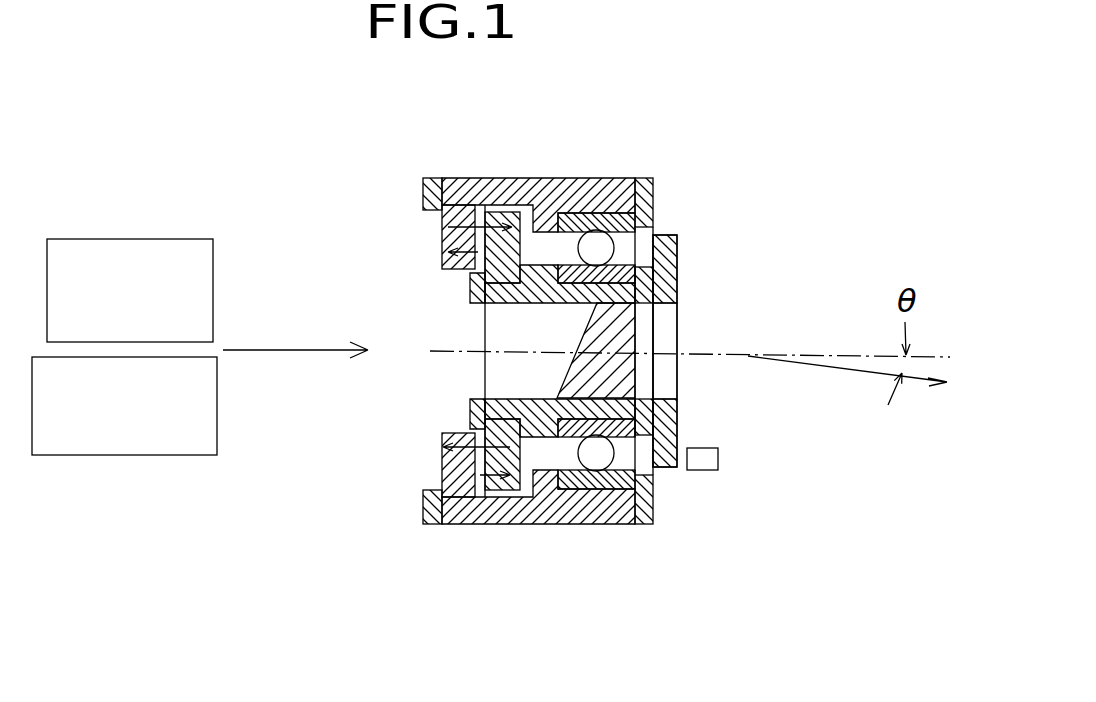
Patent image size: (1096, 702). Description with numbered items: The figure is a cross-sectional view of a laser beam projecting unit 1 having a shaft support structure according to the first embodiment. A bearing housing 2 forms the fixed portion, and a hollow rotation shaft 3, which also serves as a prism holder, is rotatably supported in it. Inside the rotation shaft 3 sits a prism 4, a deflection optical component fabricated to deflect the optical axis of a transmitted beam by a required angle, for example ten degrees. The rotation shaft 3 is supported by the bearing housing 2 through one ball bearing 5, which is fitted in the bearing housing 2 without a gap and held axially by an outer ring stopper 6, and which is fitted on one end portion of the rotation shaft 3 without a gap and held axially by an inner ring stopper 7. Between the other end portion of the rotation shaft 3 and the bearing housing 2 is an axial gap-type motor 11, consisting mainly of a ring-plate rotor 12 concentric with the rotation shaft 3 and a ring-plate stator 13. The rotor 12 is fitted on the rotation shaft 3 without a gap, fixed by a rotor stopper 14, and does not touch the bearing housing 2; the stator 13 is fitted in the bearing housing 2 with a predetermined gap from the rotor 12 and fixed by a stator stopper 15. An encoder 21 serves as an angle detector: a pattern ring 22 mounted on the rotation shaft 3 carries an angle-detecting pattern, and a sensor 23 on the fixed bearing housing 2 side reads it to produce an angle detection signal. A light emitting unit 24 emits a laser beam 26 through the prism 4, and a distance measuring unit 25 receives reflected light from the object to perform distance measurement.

The laser beam projecting unit 1 is at (257, 143).
The bearing housing 2 is at (583, 177).
The rotation shaft 3 is at (530, 303).
The prism 4 is at (657, 332).
The ball bearing 5 is at (587, 524).
The outer ring stopper 6 is at (655, 197).
The inner ring stopper 7 is at (677, 270).
The axial gap-type motor 11 is at (489, 200).
The rotor 12 is at (520, 238).
The stator 13 is at (445, 252).
The rotor stopper 14 is at (472, 290).
The stator stopper 15 is at (423, 195).
The encoder 21 is at (692, 486).
The pattern ring 22 is at (662, 470).
The sensor 23 is at (718, 460).
The light emitting unit 24 is at (147, 239).
The distance measuring unit 25 is at (133, 455).
The laser beam 26 is at (265, 350).